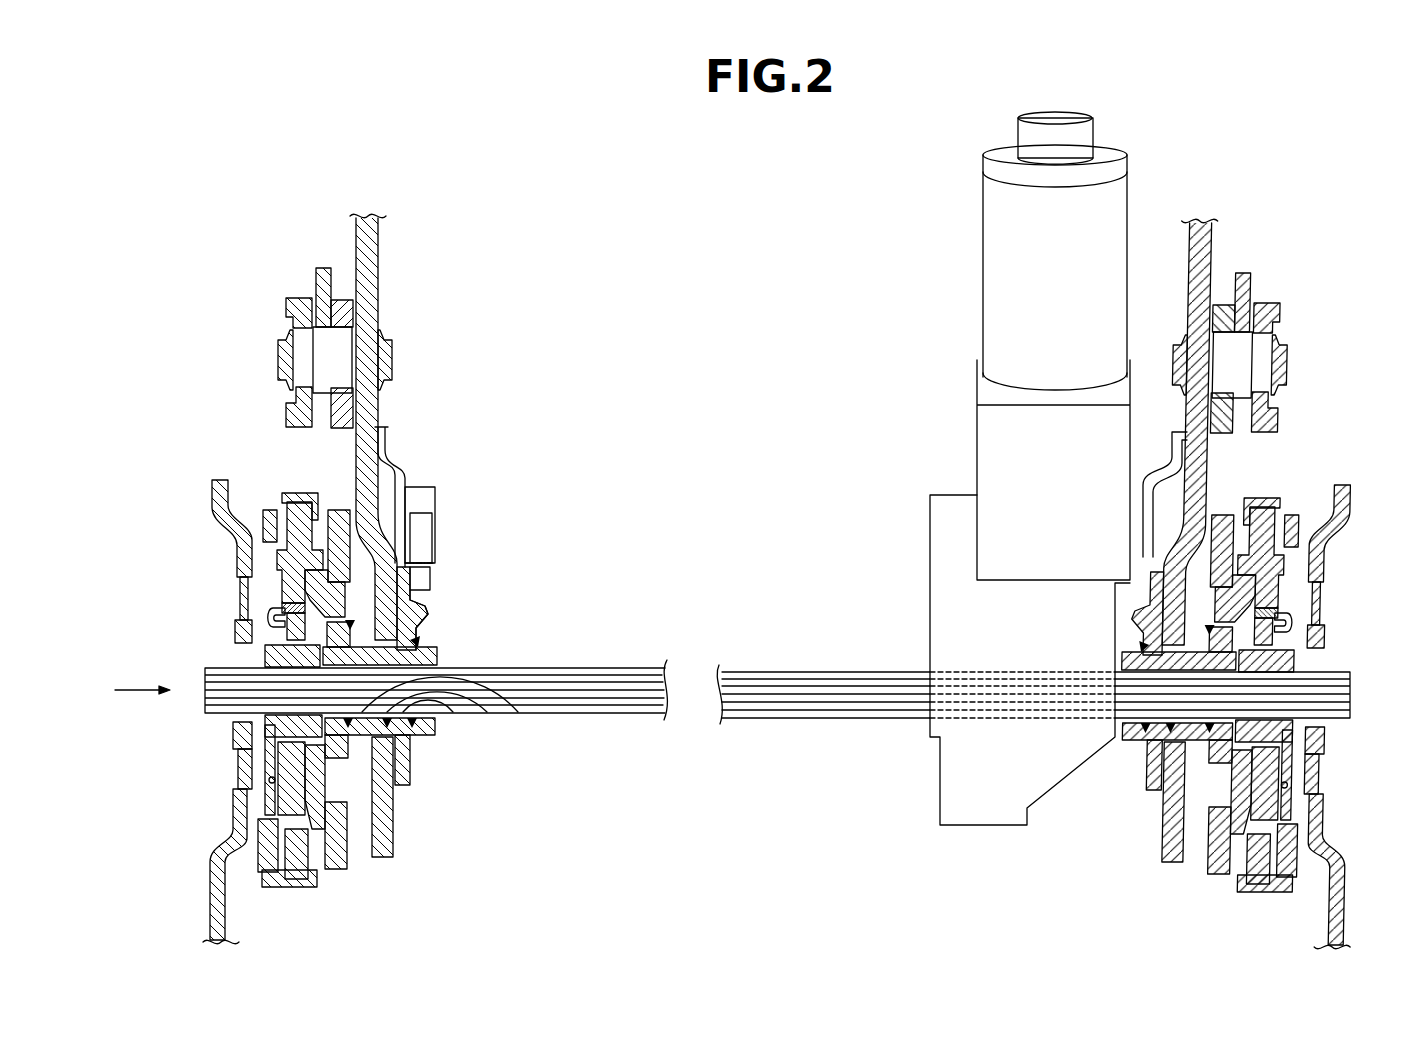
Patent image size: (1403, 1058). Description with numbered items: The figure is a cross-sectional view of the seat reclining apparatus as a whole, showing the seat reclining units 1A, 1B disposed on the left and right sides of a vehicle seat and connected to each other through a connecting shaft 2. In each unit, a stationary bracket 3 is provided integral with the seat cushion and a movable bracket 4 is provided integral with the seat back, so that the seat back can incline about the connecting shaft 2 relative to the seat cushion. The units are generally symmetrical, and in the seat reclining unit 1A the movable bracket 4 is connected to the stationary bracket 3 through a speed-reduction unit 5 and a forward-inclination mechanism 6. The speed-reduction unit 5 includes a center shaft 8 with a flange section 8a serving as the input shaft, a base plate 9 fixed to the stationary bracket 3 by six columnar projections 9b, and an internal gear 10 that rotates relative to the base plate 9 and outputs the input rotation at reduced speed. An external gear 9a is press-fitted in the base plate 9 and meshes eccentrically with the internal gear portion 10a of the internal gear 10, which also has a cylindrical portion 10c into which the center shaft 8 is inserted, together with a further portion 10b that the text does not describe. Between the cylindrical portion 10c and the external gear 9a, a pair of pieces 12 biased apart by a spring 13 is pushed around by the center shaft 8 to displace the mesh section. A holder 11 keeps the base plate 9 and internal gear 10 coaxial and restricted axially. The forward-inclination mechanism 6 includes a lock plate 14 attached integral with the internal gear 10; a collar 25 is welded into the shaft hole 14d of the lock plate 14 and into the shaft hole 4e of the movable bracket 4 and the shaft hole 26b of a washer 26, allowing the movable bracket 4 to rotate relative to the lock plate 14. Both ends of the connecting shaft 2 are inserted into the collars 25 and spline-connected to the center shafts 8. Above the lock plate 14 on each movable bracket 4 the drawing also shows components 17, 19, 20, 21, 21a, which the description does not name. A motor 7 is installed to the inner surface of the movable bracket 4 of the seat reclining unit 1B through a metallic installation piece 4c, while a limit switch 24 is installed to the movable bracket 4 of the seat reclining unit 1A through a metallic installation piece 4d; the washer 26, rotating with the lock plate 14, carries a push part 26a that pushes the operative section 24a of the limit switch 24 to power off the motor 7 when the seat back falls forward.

The seat reclining unit 1A is at (437, 817).
The seat reclining unit 1B is at (1122, 852).
The connecting shaft 2 is at (817, 703).
The stationary bracket 3 is at (215, 887).
The movable bracket 4 is at (380, 250).
The metallic installation piece 4c is at (1148, 497).
The metallic installation piece 4d is at (400, 468).
The shaft hole 4e is at (483, 707).
The speed-reduction unit 5 is at (318, 893).
The forward-inclination mechanism 6 is at (382, 893).
The motor 7 is at (1010, 280).
The center shaft 8 is at (270, 642).
The flange section 8a is at (240, 740).
The base plate 9 is at (277, 503).
The external gear 9a is at (267, 572).
The columnar projections 9b is at (243, 773).
The internal gear 10 is at (292, 573).
The internal gear portion 10a is at (312, 495).
The hub flange 10b is at (345, 597).
The cylindrical portion 10c is at (283, 653).
The holder 11 is at (268, 512).
The pair of pieces 12 is at (270, 622).
The spring 13 is at (280, 615).
The lock plate 14 is at (338, 512).
The shaft hole 14d is at (513, 710).
The hub body 17 is at (298, 298).
The shaft pin 19 is at (326, 268).
The bushing 20 is at (352, 316).
The flange 21 is at (300, 363).
The flange 21a is at (392, 362).
The limit switch 24 is at (435, 502).
The operative section 24a is at (430, 573).
The collar 25 is at (437, 660).
The washer 26 is at (414, 632).
The push part 26a is at (428, 603).
The shaft hole 26b is at (457, 707).